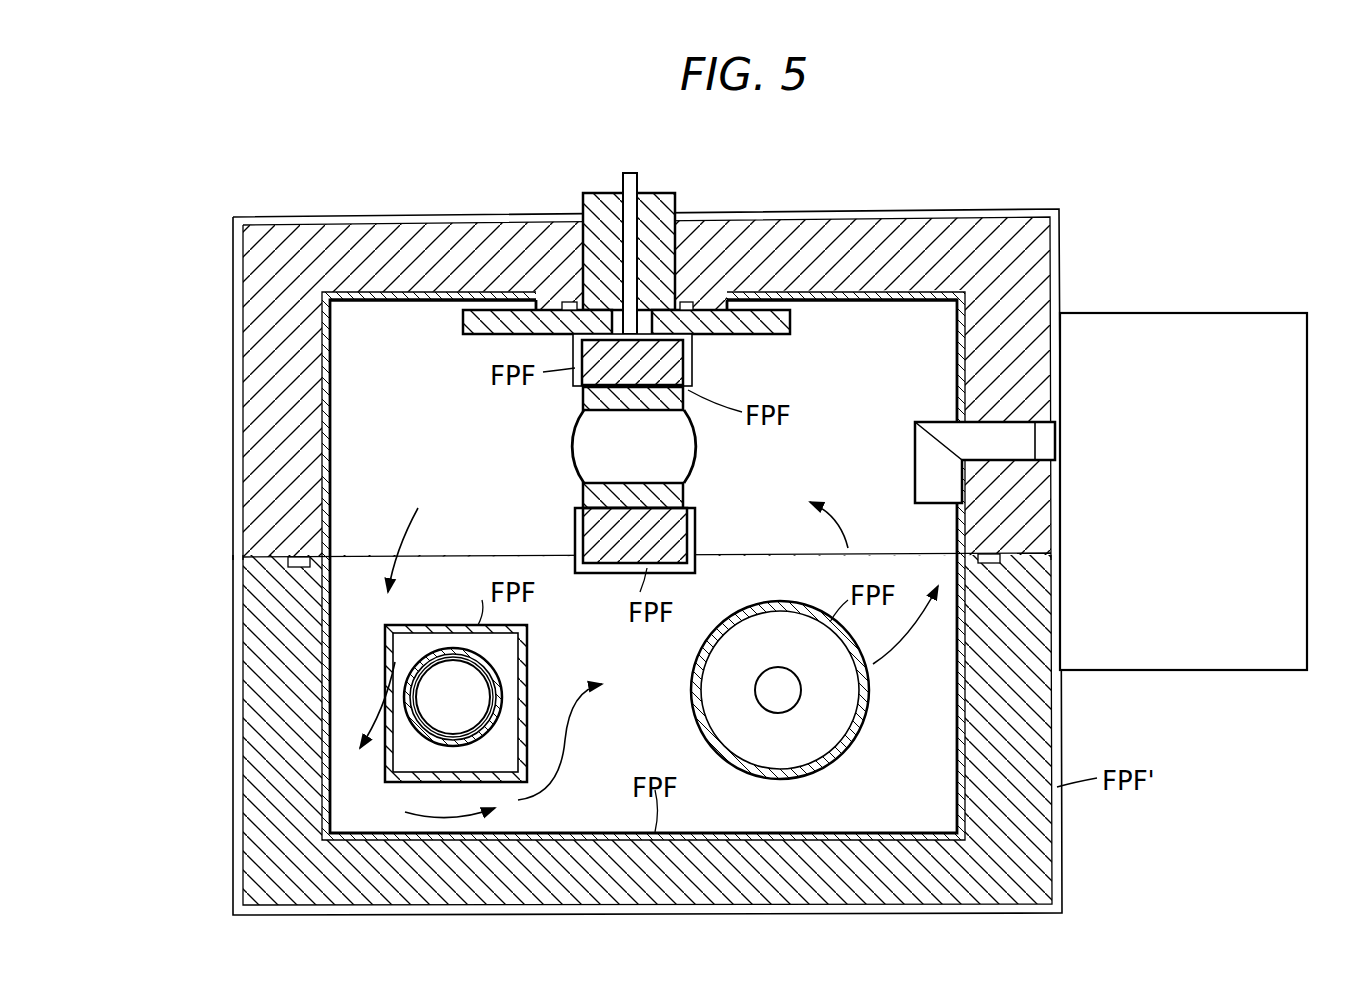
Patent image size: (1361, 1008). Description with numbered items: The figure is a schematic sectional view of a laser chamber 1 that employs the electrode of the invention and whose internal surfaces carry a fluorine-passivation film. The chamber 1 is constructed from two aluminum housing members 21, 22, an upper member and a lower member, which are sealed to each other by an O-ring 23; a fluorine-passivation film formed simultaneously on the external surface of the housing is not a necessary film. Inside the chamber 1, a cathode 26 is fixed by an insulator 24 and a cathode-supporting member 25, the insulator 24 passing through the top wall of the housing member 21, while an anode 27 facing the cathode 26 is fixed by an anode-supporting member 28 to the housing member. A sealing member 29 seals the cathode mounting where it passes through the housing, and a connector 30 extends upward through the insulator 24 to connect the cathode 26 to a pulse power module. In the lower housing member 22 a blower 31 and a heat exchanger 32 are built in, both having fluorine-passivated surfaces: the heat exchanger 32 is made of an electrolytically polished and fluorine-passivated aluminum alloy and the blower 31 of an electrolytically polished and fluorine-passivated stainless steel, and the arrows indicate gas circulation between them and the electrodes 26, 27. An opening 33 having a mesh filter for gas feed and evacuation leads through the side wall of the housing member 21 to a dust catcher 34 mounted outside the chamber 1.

The laser chamber 1 is at (968, 195).
The housing member 21 is at (258, 368).
The housing member 22 is at (253, 718).
The O-ring 23 is at (300, 564).
The insulator 24 is at (658, 192).
The cathode-supporting member 25 is at (680, 372).
The cathode 26 is at (690, 396).
The anode 27 is at (673, 495).
The anode-supporting member 28 is at (590, 533).
The sealing member 29 is at (690, 300).
The connector 30 is at (630, 171).
The blower 31 is at (797, 752).
The heat exchanger 32 is at (510, 665).
The opening 33 is at (930, 507).
The dust catcher 34 is at (1188, 313).